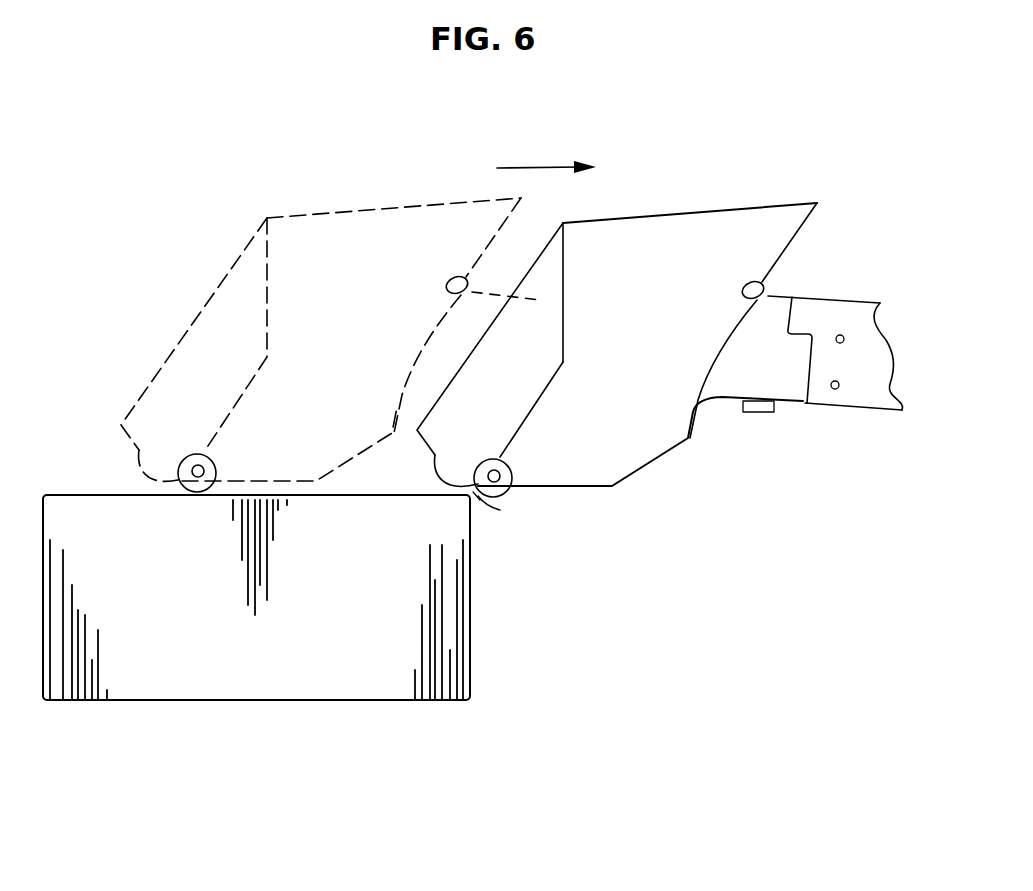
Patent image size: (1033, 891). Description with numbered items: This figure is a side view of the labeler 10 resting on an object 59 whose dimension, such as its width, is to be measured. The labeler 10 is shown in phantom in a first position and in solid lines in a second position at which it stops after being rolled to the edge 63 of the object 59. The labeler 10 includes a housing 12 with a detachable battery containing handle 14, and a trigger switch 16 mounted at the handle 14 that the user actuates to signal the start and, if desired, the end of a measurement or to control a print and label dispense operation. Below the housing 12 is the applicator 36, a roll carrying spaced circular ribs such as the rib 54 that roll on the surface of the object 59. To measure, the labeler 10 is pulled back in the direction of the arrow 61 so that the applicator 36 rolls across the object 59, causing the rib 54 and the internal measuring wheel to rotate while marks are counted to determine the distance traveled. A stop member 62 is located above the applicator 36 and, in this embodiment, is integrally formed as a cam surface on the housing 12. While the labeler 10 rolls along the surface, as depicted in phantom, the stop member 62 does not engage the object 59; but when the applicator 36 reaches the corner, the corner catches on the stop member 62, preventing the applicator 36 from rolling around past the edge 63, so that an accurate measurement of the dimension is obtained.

The labeler 10 is at (346, 208).
The housing 12 is at (677, 227).
The detachable battery containing handle 14 is at (858, 402).
The trigger switch 16 is at (760, 413).
The applicator 36 is at (516, 504).
The applicator rib 54 is at (490, 497).
The object 59 is at (457, 627).
The arrow 61 is at (535, 168).
The stop member 62 is at (438, 463).
The edge 63 is at (473, 495).